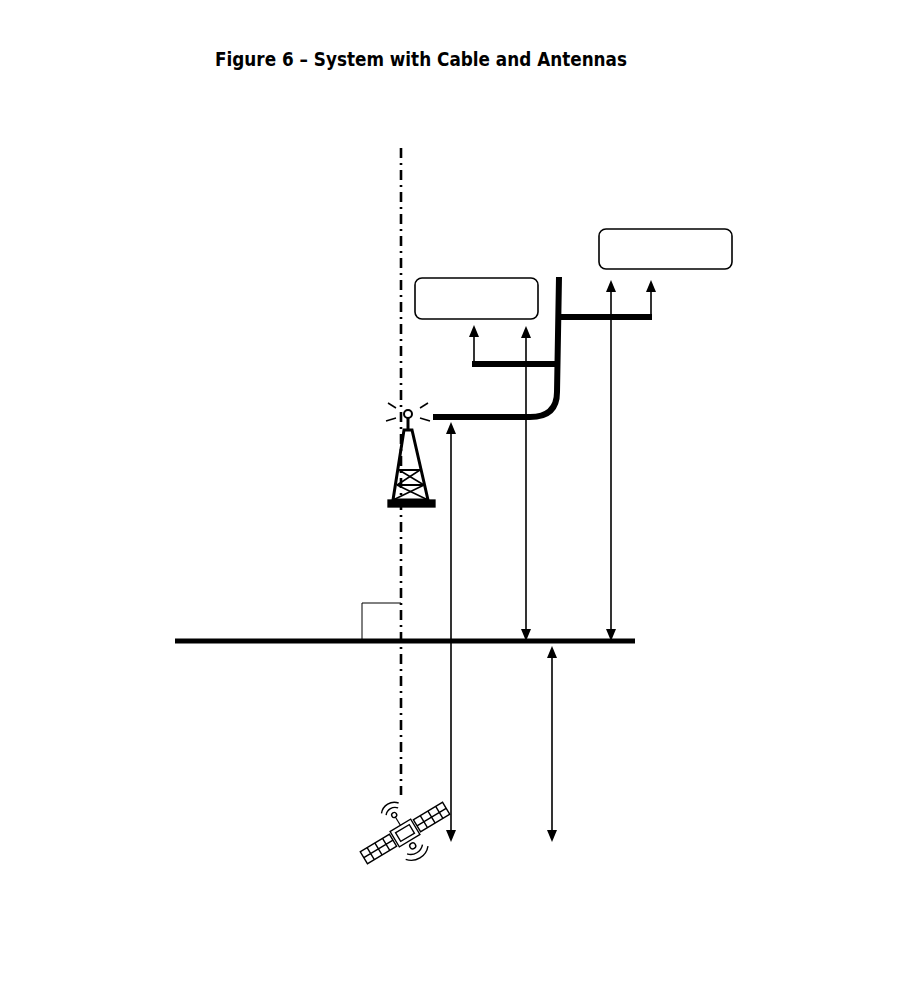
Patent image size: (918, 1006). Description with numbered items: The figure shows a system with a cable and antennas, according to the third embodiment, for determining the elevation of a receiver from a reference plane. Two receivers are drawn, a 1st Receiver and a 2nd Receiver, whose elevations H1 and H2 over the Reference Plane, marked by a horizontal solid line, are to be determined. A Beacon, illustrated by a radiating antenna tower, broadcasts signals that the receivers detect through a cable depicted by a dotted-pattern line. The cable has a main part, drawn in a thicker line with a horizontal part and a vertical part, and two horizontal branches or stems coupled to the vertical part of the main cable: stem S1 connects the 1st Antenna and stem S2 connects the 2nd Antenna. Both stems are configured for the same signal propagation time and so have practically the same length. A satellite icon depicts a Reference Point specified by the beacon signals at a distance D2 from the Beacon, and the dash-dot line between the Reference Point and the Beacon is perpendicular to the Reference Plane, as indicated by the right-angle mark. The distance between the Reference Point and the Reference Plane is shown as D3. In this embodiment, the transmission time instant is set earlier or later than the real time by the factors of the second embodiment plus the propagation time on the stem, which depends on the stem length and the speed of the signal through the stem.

The first receiver 1st Receiver is at (476, 298).
The second receiver 2nd Receiver is at (665, 249).
The first antenna 1st Antenna is at (371, 343).
The second antenna 2nd Antenna is at (747, 321).
The stem S1 is at (424, 405).
The stem S2 is at (629, 367).
The beacon Beacon is at (294, 455).
The reference plane Reference Plane is at (339, 586).
The reference point Reference Point is at (307, 803).
The elevation of the first receiver H1 is at (500, 483).
The elevation of the second receiver H2 is at (584, 460).
The distance D2 is at (484, 632).
The distance D3 is at (601, 744).